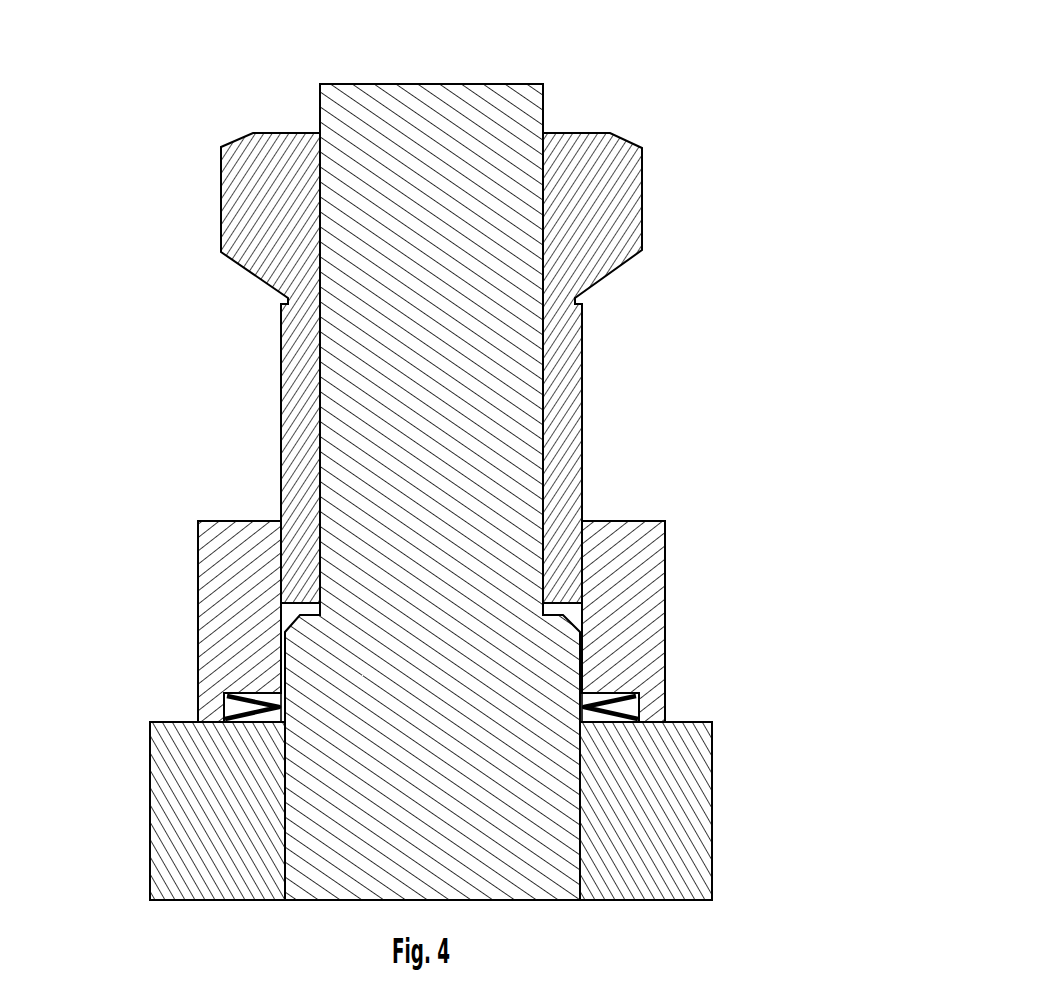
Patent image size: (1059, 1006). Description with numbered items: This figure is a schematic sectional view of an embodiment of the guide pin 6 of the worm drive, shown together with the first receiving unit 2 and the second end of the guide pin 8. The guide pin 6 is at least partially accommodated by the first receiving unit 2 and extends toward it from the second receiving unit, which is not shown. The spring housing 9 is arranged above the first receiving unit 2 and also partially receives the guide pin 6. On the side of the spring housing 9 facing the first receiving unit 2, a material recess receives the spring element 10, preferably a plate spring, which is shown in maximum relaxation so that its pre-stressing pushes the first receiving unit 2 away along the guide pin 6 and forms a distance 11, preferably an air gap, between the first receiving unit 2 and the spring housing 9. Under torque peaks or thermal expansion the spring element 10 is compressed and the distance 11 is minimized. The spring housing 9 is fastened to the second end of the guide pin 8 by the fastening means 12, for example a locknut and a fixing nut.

The first receiving unit 2 is at (718, 807).
The guide pin 6 is at (532, 449).
The second end of the guide pin 8 is at (560, 104).
The spring housing 9 is at (669, 599).
The spring element 10 is at (227, 700).
The distance 11 is at (671, 720).
The fastening means 12 is at (207, 213).